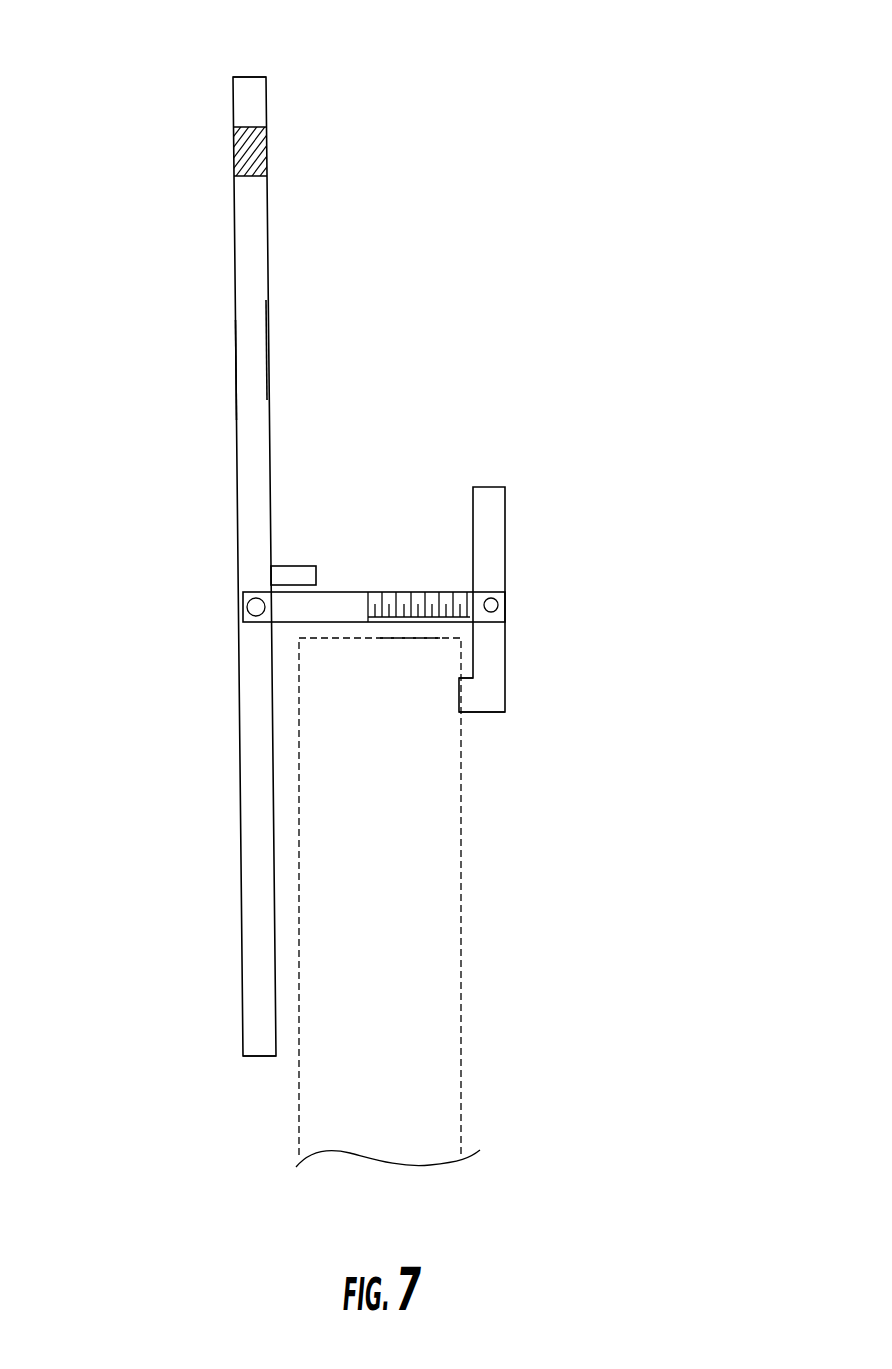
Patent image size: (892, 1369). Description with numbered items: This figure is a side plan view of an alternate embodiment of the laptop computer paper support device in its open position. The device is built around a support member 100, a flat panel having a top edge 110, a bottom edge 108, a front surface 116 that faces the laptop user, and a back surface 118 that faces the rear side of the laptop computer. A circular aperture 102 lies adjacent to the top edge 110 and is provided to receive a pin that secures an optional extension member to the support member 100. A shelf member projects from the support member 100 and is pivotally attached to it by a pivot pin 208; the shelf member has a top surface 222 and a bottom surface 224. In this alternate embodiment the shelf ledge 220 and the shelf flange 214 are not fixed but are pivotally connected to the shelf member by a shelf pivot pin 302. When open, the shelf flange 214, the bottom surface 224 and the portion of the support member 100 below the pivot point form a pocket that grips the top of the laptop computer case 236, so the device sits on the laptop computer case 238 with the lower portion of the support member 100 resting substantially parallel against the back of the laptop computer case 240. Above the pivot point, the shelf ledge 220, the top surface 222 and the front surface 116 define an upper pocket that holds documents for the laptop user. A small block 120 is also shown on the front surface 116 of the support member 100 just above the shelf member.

The support member 100 is at (253, 232).
The circular aperture 102 is at (233, 154).
The bottom edge 108 is at (255, 1057).
The top edge 110 is at (250, 77).
The front surface 116 is at (268, 345).
The back surface 118 is at (237, 368).
The stop block 120 is at (293, 566).
The pivot pin 208 is at (244, 610).
The shelf flange 214 is at (497, 693).
The shelf ledge 220 is at (490, 527).
The top surface 222 is at (340, 590).
The bottom surface 224 is at (400, 622).
The top of the laptop computer case 236 is at (405, 640).
The laptop computer case 238 is at (462, 836).
The back of the laptop computer case 240 is at (300, 1090).
The shelf pivot pin 302 is at (491, 597).